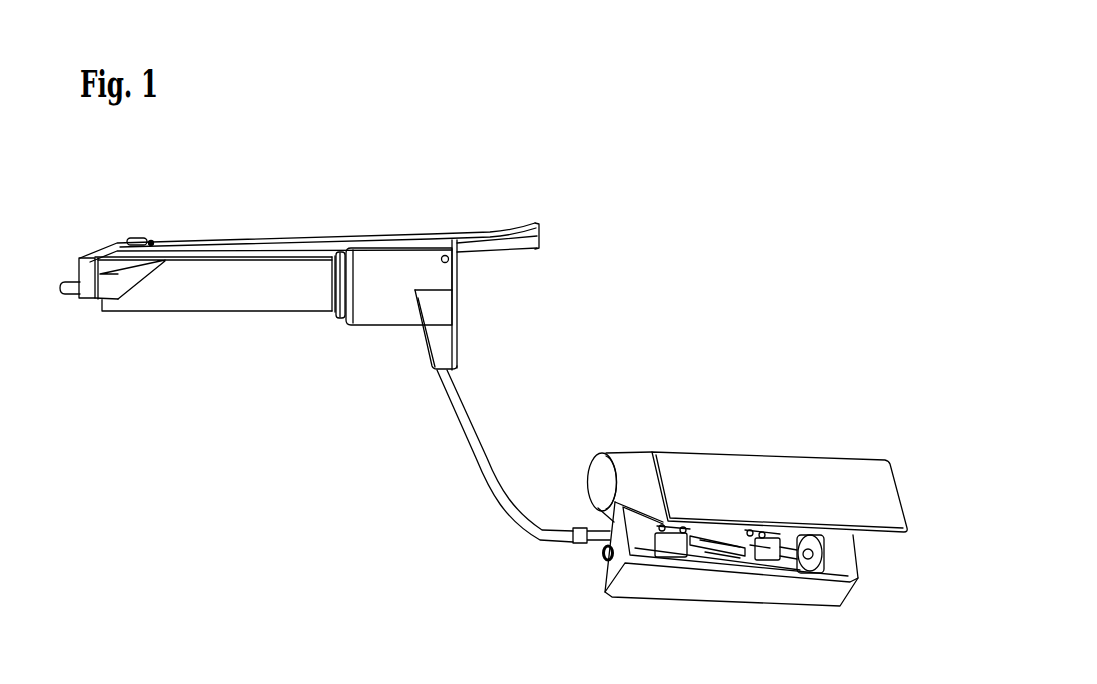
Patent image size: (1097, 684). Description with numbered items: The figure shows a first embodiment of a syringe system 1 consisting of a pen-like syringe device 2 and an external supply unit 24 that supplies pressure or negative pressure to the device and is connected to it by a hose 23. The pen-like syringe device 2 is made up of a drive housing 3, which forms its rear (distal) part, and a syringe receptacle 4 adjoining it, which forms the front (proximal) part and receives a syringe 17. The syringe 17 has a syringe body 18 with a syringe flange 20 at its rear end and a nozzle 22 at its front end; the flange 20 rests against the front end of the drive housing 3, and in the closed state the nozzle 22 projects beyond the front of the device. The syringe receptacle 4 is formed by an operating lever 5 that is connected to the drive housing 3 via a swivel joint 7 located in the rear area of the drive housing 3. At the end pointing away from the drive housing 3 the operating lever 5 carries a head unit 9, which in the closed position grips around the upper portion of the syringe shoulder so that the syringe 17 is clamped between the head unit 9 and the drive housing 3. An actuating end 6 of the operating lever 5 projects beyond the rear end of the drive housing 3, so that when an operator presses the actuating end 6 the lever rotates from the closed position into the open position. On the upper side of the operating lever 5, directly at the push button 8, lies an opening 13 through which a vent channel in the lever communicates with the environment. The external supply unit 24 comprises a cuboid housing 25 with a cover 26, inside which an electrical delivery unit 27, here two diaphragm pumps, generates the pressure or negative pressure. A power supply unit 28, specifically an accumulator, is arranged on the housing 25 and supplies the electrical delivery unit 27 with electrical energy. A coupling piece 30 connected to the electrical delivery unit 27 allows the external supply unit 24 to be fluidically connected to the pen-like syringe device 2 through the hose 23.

The syringe system 1 is at (712, 132).
The pen-like syringe device 2 is at (446, 178).
The drive housing 3 is at (420, 305).
The syringe receptacle 4 is at (231, 204).
The operating lever 5 is at (306, 240).
The actuating end 6 is at (530, 226).
The swivel joint 7 is at (452, 255).
The push button 8 is at (136, 238).
The head unit 9 is at (98, 292).
The opening 13 is at (154, 240).
The syringe 17 is at (262, 290).
The syringe body 18 is at (163, 305).
The syringe flange 20 is at (333, 300).
The nozzle 22 is at (70, 278).
The hose 23 is at (458, 430).
The external supply unit 24 is at (799, 340).
The housing 25 is at (680, 610).
The cover 26 is at (822, 467).
The electrical delivery unit 27 is at (665, 552).
The power supply unit 28 is at (636, 455).
The coupling piece 30 is at (598, 539).